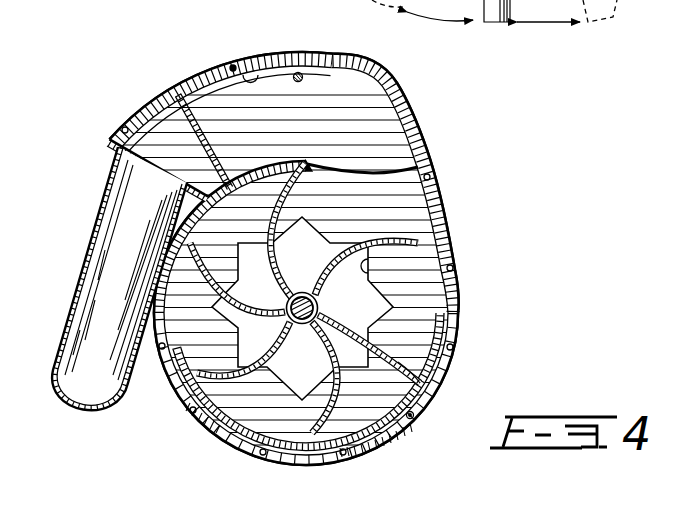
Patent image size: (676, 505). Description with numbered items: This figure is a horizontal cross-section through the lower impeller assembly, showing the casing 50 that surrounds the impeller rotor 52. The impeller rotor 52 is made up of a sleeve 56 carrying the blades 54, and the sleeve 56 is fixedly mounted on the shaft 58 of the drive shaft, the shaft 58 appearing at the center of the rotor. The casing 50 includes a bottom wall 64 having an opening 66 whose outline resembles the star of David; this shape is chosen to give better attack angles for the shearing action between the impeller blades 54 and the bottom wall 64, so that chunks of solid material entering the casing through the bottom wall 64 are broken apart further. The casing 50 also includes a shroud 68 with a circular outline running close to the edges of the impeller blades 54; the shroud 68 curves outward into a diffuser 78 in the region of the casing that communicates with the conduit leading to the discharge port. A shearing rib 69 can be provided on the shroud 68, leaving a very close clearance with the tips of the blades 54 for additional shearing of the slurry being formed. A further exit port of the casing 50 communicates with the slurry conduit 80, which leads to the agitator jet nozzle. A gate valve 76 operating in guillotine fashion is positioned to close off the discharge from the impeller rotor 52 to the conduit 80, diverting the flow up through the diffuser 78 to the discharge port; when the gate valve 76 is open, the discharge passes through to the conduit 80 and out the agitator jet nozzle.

The casing 50 is at (442, 171).
The impeller rotor 52 is at (412, 340).
The impeller blades 54 is at (398, 234).
The sleeve 56 is at (415, 371).
The shaft 58 is at (413, 418).
The bottom wall 64 is at (370, 150).
The opening 66 is at (373, 274).
The shroud 68 is at (187, 217).
The shearing rib 69 is at (419, 166).
The gate valve 76 is at (178, 86).
The diffuser 78 is at (235, 66).
The slurry conduit 80 is at (110, 186).